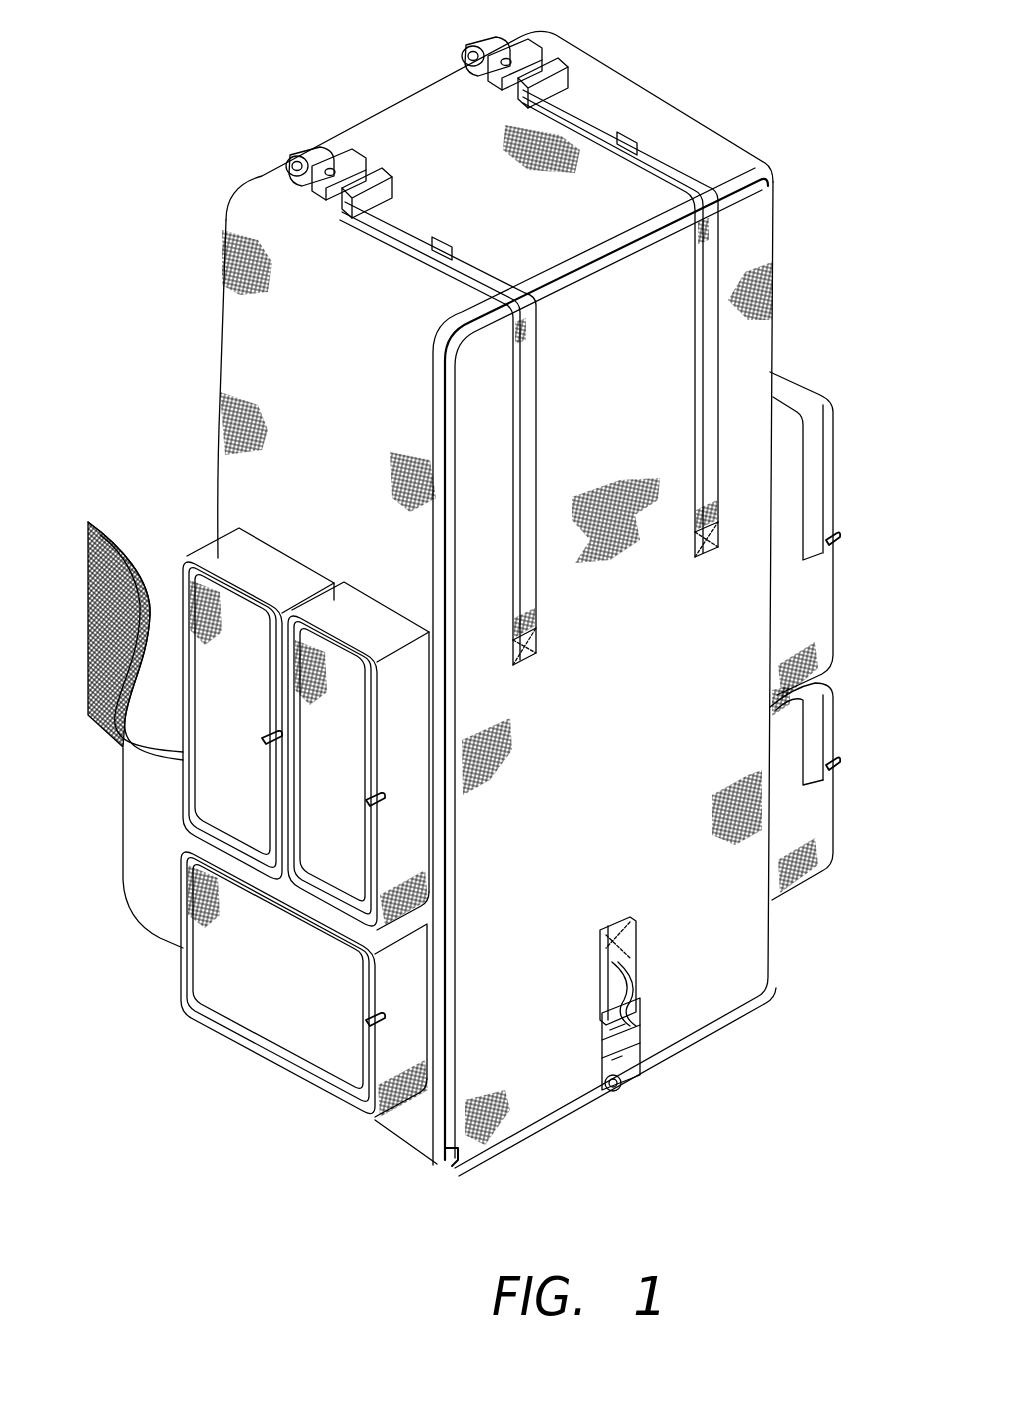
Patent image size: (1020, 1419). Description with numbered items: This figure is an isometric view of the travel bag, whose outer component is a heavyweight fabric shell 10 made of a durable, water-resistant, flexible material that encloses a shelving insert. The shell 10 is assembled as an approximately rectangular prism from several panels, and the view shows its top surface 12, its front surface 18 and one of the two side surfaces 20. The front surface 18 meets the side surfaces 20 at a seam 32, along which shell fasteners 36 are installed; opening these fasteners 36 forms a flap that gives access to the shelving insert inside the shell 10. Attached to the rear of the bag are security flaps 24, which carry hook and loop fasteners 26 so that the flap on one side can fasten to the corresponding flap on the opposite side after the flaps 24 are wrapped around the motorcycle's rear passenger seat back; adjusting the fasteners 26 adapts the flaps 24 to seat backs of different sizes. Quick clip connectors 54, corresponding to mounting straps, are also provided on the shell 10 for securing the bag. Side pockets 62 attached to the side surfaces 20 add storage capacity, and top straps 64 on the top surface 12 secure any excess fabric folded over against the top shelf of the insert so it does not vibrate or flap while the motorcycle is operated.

The fabric shell 10 is at (214, 250).
The top surface 12 is at (693, 130).
The front surface 18 is at (738, 948).
The side surfaces 20 is at (250, 354).
The security flaps 24 is at (152, 880).
The hook and loop fasteners 26 is at (86, 563).
The seam 32 is at (450, 1098).
The shell fasteners 36 is at (438, 1165).
The quick clip connectors 54 is at (643, 1053).
The side pockets 62 is at (198, 773).
The top straps 64 is at (593, 123).